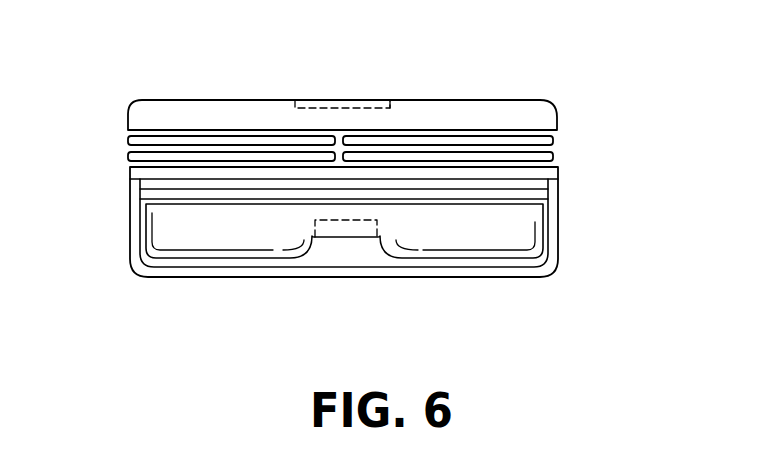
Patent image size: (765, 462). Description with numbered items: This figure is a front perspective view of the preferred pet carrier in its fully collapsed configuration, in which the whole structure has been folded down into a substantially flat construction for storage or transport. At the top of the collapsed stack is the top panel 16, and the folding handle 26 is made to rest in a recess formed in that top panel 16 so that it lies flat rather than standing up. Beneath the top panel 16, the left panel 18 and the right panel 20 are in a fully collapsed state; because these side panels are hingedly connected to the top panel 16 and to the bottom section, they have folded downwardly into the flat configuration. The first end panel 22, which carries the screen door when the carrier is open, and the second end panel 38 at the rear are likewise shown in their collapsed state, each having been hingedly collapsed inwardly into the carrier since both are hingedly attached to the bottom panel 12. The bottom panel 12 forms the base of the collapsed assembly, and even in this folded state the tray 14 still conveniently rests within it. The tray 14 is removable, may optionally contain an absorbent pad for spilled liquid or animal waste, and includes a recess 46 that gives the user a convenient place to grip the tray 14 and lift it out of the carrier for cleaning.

The bottom panel 12 is at (517, 272).
The tray 14 is at (183, 225).
The top panel 16 is at (515, 103).
The left panel 18 is at (162, 145).
The right panel 20 is at (525, 143).
The first end panel 22 is at (528, 158).
The folding handle 26 is at (340, 102).
The second end panel 38 is at (522, 192).
The recess 46 is at (323, 242).